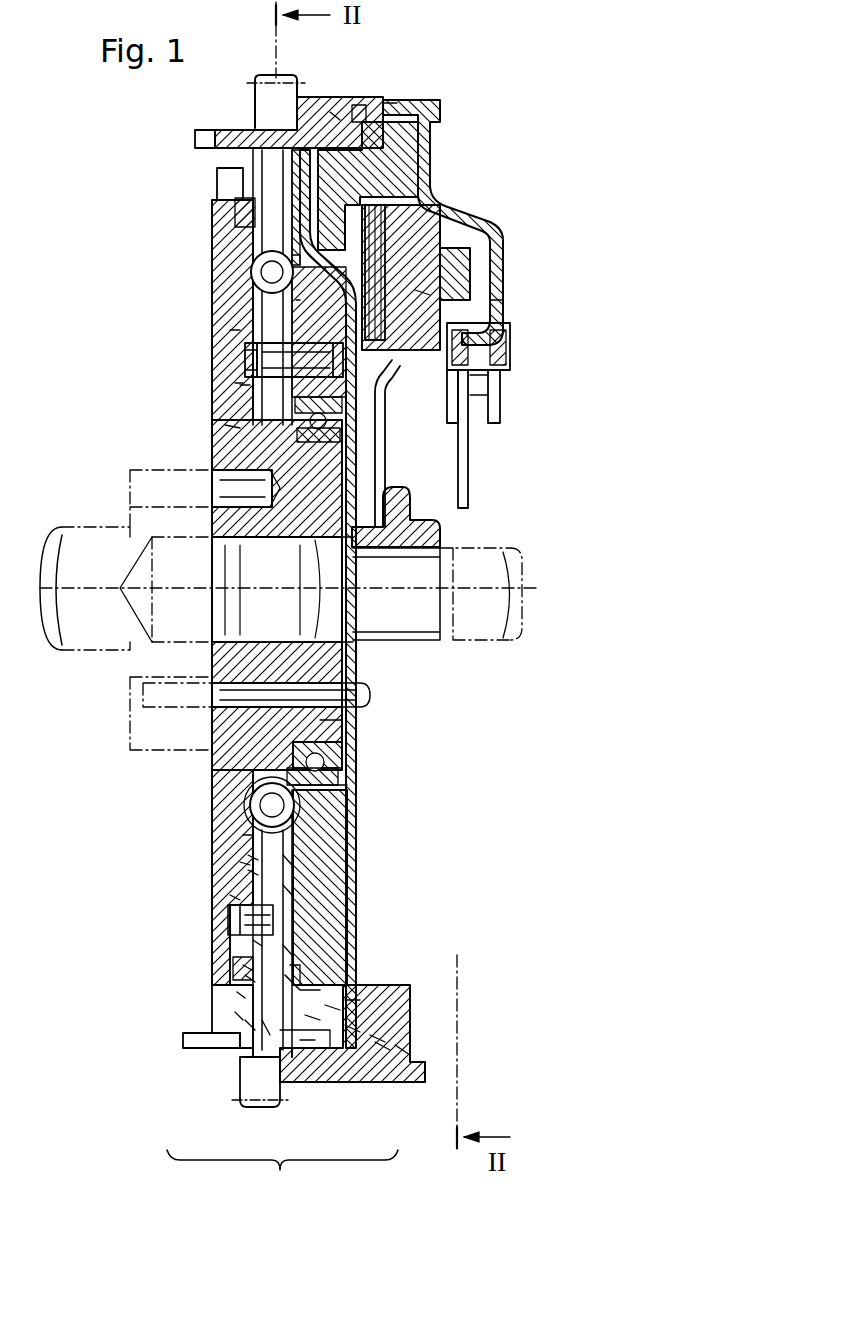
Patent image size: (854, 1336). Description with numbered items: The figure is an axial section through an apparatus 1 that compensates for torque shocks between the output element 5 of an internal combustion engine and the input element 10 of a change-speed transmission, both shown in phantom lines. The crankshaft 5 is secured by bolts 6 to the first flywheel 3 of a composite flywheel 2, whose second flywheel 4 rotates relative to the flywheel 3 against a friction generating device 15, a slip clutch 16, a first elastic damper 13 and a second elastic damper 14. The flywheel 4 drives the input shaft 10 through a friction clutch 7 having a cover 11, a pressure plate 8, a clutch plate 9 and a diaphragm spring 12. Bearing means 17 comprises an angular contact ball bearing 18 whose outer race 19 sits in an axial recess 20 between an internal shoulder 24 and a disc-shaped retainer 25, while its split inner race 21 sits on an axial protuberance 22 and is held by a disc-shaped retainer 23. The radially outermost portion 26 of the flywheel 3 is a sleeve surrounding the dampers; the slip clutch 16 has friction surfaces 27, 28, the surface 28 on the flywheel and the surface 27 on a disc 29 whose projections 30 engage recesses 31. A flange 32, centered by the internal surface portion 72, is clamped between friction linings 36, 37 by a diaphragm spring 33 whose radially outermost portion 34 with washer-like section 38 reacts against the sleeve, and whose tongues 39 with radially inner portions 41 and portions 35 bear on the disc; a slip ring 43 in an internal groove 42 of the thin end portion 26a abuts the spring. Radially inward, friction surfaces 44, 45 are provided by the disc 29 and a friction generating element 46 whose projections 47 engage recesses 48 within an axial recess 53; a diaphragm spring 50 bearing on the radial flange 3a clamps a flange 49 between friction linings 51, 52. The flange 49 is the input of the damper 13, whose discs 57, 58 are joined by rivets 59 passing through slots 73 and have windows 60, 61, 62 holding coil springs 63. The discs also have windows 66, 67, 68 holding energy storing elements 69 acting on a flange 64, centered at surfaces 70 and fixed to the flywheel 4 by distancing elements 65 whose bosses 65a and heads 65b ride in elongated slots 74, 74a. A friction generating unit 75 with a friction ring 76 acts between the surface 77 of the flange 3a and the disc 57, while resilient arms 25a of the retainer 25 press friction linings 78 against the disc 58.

The apparatus 1 is at (487, 92).
The composite flywheel 2 is at (282, 1176).
The first flywheel 3 is at (210, 1010).
The radial flange 3a is at (217, 858).
The second flywheel 4 is at (378, 1038).
The output element 5 is at (82, 555).
The bolts 6 is at (353, 697).
The friction clutch 7 is at (510, 260).
The pressure plate 8 is at (477, 243).
The clutch plate 9 is at (388, 427).
The input element 10 is at (500, 575).
The cover 11 is at (497, 310).
The diaphragm spring 12 is at (497, 330).
The first elastic damper 13 is at (240, 255).
The second elastic damper 14 is at (297, 813).
The friction generating device 15 is at (232, 213).
The slip clutch 16 is at (302, 162).
The bearing means 17 is at (210, 482).
The antifriction angular contact ball bearing 18 is at (385, 440).
The outer race 19 is at (362, 410).
The axial recess 20 is at (380, 390).
The split inner race 21 is at (230, 447).
The axial protuberance 22 is at (320, 728).
The disc-shaped retainer 23 is at (347, 753).
The internal shoulder 24 is at (360, 398).
The disc-shaped retainer 25 is at (295, 402).
The arms 25a is at (282, 862).
The radially outermost portion 26 is at (312, 108).
The end portion 26a is at (330, 117).
The friction surface 27 is at (350, 1005).
The friction surface 28 is at (242, 1025).
The disc 29 is at (312, 1018).
The projections 30 is at (282, 1042).
The recesses 31 is at (307, 1040).
The flange 32 is at (262, 1025).
The diaphragm spring 33 is at (352, 1030).
The radially outermost portion 34 is at (400, 1050).
The radially inner portions 35 is at (345, 980).
The friction lining 36 is at (262, 1030).
The friction lining 37 is at (250, 1025).
The washer-like section 38 is at (380, 1045).
The tongues 39 is at (330, 1010).
The radially inner portions 41 is at (300, 980).
The internal groove 42 is at (360, 110).
The slip ring 43 is at (397, 103).
The friction surface 44 is at (290, 990).
The friction surface 45 is at (227, 957).
The friction generating element 46 is at (250, 978).
The projections 47 is at (250, 185).
The recesses 48 is at (230, 165).
The flange 49 is at (257, 943).
The diaphragm spring 50 is at (247, 967).
The friction lining 51 is at (287, 950).
The friction lining 52 is at (240, 995).
The recess 53 is at (238, 1017).
The disc 57 is at (252, 873).
The disc 58 is at (280, 890).
The rivets 59 is at (260, 913).
The window 60 is at (243, 295).
The window 61 is at (340, 270).
The window 62 is at (268, 278).
The coil springs 63 is at (250, 265).
The flange 64 is at (240, 428).
The distancing elements 65 is at (253, 368).
The boss 65a is at (248, 353).
The head 65b is at (238, 385).
The window 66 is at (243, 840).
The window 67 is at (295, 787).
The window 68 is at (257, 808).
The energy storing elements 69 is at (238, 795).
The centering surfaces 70 is at (252, 858).
The internal surface portion 72 is at (262, 150).
The slots 73 is at (233, 898).
The elongated slots 74 is at (233, 337).
The elongated slots 74a is at (247, 385).
The friction generating unit 75 is at (380, 250).
The friction ring 76 is at (240, 318).
The surface 77 is at (243, 863).
The friction linings 78 is at (503, 300).